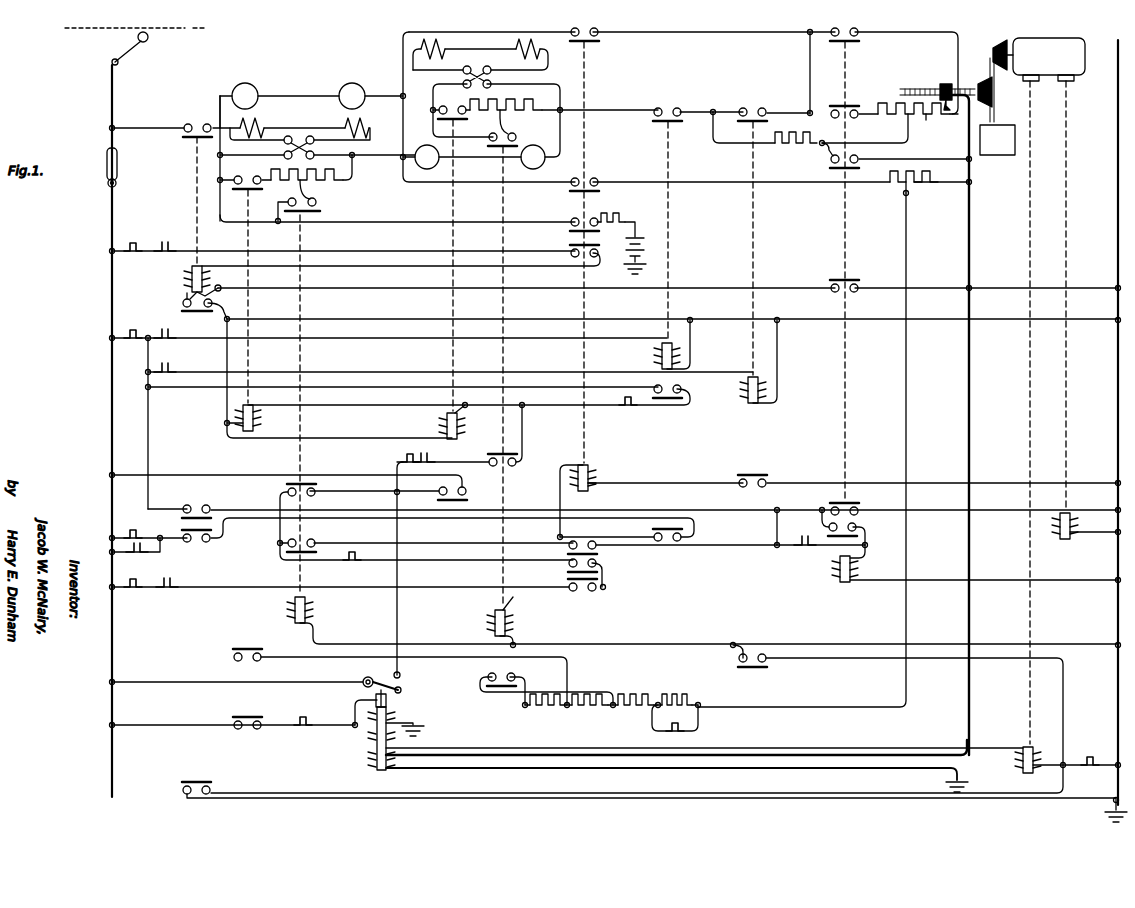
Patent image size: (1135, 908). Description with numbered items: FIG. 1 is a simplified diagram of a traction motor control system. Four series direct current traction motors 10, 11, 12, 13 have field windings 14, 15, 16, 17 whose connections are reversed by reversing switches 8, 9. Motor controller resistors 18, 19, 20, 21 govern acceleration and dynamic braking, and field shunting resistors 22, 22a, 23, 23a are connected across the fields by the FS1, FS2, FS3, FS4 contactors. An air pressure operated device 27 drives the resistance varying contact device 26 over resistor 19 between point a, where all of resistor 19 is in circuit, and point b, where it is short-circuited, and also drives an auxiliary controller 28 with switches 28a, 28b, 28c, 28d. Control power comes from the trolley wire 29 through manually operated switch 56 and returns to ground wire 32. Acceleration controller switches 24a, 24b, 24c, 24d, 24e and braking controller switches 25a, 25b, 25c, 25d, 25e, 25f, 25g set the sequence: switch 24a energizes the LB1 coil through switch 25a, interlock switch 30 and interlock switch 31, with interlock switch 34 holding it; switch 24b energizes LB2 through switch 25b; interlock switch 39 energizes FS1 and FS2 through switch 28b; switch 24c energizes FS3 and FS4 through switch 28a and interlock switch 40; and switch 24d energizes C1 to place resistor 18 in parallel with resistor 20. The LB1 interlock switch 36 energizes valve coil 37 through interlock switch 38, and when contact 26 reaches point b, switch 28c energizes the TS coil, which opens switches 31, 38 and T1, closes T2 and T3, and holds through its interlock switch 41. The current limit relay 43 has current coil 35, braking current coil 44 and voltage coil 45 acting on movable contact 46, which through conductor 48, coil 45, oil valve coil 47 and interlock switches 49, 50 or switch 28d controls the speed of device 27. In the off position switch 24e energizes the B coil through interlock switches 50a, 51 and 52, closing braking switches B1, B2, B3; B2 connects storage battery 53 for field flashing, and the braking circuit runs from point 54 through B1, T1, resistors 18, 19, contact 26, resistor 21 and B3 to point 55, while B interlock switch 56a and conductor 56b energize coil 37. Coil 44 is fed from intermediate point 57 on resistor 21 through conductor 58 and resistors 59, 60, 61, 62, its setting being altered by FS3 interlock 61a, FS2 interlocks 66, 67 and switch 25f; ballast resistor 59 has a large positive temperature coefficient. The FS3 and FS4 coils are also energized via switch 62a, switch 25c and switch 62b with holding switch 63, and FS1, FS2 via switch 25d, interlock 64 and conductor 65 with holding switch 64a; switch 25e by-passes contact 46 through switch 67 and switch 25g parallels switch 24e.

The reversing switch 8 is at (315, 148).
The reversing switch 9 is at (490, 78).
The traction motor 10 is at (239, 96).
The traction motor 11 is at (330, 96).
The traction motor 12 is at (395, 157).
The traction motor 13 is at (499, 126).
The field winding 14 is at (436, 46).
The field winding 15 is at (518, 46).
The field winding 16 is at (256, 118).
The field winding 17 is at (344, 118).
The motor controller resistor 18 is at (888, 104).
The motor controller resistor 19 is at (928, 122).
The motor controller resistor 20 is at (802, 137).
The motor controller resistor 21 is at (918, 194).
The field shunting resistor 22 is at (284, 200).
The field shunting resistance 22a is at (338, 184).
The field shunting resistor 23 is at (495, 106).
The field shunting resistance 23a is at (518, 122).
The acceleration controller switch 24a is at (168, 242).
The acceleration controller switch 24b is at (168, 330).
The acceleration controller switch 24c is at (168, 581).
The acceleration controller switch 24d is at (170, 364).
The acceleration controller switch 24e is at (146, 549).
The braking controller switch 25a is at (133, 243).
The braking controller switch 25b is at (133, 330).
The braking controller switch 25c is at (352, 566).
The braking controller switch 25d is at (410, 455).
The braking controller switch 25e is at (305, 716).
The braking controller switch 25f is at (692, 727).
The braking controller switch 25g is at (135, 531).
The resistance varying contact device 26 is at (946, 82).
The air pressure operated fluid device 27 is at (1031, 391).
The auxiliary controller 28 is at (997, 140).
The auxiliary controller switch 28a is at (167, 592).
The auxiliary controller switch 28b is at (628, 413).
The auxiliary controller switch 28c is at (810, 532).
The auxiliary controller switch 28d is at (1092, 757).
The supply wire 29 is at (110, 222).
The interlock switch 30 is at (570, 247).
The interlock switch 31 is at (848, 283).
The ground wire 32 is at (1117, 210).
The LB1 interlock switch 34 is at (214, 303).
The current coil 35 is at (368, 760).
The LB1 interlock switch 36 is at (207, 505).
The valve operating coil 37 is at (1075, 519).
The interlock switch 38 is at (850, 504).
The interlock switch 39 is at (684, 397).
The interlock switch 40 is at (584, 595).
The TS interlock switch 41 is at (856, 525).
The current limit relay 43 is at (410, 721).
The braking current coil 44 is at (387, 706).
The voltage coil 45 is at (368, 738).
The movable contact 46 is at (365, 678).
The oil valve coil 47 is at (1037, 752).
The conductor 48 is at (157, 685).
The C1 interlock switch 49 is at (768, 664).
The LB1 interlock switch 50 is at (205, 786).
The LB1 interlock switch 50a is at (206, 544).
The LB2 interlock switch 51 is at (656, 531).
The C1 interlock switch 52 is at (760, 479).
The storage battery 53 is at (626, 255).
The point 54 is at (401, 93).
The point 55 is at (403, 155).
The manually operated switch 56 is at (118, 163).
The B interlock switch 56a is at (569, 547).
The conductor 56b is at (698, 547).
The intermediate point 57 is at (903, 195).
The conductor 58 is at (908, 364).
The ballast resistance 59 is at (678, 700).
The resistor 60 is at (634, 700).
The resistor 61 is at (592, 708).
The FS3 interlock switch 61a is at (485, 680).
The resistance 62 is at (550, 708).
The FS4 interlock switch 62a is at (314, 486).
The B interlock switch 62b is at (569, 566).
The FS4 interlock switch 63 is at (314, 541).
The FS3 interlock switch 64 is at (506, 468).
The FS1 interlock switch 64a is at (466, 494).
The conductor 65 is at (229, 358).
The FS2 interlock switch 66 is at (240, 650).
The FS2 interlock switch 67 is at (240, 716).
The braking relay coil B is at (590, 470).
The braking switch B1 is at (594, 40).
The braking switch B2 is at (573, 219).
The braking switch B3 is at (594, 187).
The line breaker contactor LB1 is at (166, 203).
The line breaker contactor LB2 is at (636, 230).
The contactor C1 is at (761, 247).
The TS switch T1 is at (836, 108).
The TS switch T2 is at (858, 40).
The TS switch T3 is at (859, 166).
The field shunt contactor FS1 is at (462, 261).
The field shunt contactor FS2 is at (252, 295).
The field shunt contactor FS3 is at (498, 389).
The field shunt contactor FS4 is at (318, 206).
The transfer relay coil TS is at (966, 564).
The point a is at (957, 122).
The point b is at (871, 128).